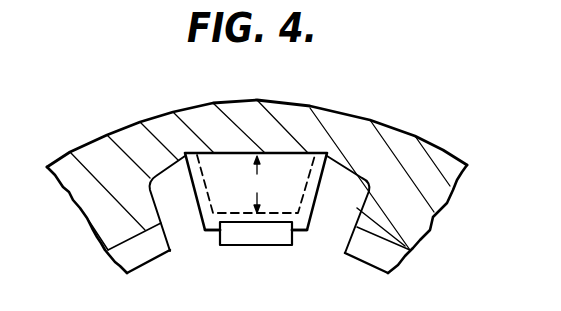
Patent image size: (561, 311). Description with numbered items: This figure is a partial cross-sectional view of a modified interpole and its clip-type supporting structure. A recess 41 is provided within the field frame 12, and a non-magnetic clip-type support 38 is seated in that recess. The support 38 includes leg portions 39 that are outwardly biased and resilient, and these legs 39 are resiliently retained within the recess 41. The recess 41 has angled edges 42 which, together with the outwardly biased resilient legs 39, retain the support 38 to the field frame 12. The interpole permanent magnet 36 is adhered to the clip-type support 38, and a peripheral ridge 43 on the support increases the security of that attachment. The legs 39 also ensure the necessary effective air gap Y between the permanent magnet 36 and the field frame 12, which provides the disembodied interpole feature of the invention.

The field frame 12 is at (405, 160).
The interpole permanent magnet 36 is at (252, 238).
The clip-type support 38 is at (289, 176).
The leg portions 39 is at (203, 211).
The recess 41 is at (210, 161).
The angled edges 42 is at (186, 166).
The peripheral ridge 43 is at (304, 228).